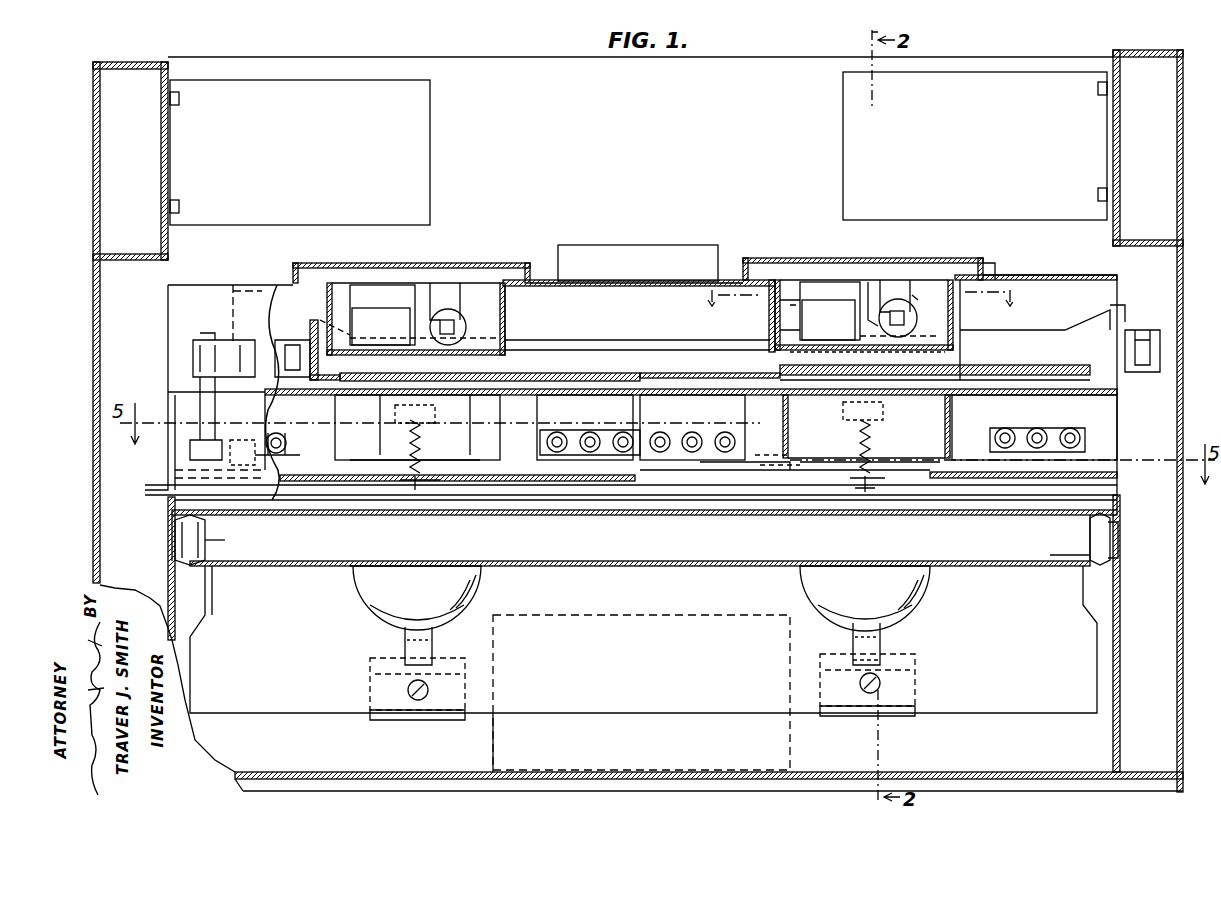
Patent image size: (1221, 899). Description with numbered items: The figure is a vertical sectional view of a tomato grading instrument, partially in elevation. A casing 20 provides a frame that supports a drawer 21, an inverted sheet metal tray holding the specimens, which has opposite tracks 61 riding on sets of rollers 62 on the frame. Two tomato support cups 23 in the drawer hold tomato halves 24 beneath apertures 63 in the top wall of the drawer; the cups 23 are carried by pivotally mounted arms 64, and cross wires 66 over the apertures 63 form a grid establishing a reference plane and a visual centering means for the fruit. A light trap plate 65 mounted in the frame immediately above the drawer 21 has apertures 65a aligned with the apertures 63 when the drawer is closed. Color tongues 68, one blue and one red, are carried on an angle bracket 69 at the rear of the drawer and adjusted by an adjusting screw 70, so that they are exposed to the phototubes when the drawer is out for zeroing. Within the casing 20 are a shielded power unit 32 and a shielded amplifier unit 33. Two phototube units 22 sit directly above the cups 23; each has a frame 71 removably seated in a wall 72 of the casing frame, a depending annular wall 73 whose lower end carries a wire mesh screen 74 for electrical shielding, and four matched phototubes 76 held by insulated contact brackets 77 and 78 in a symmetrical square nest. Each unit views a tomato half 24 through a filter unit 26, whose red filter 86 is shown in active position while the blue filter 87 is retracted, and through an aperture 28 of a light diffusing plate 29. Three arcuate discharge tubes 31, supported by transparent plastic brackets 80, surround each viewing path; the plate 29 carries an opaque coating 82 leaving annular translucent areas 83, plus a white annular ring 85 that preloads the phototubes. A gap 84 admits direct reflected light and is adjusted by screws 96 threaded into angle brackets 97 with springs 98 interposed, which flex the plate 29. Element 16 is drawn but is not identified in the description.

The pin 16 is at (925, 301).
The casing 20 is at (1183, 262).
The drawer 21 is at (1095, 645).
The phototube unit 22 is at (464, 262).
The tomato support cup 23 is at (378, 618).
The tomato half 24 is at (478, 586).
The filter unit 26 is at (1000, 358).
The aperture 28 is at (800, 462).
The light diffusing plate 29 is at (758, 486).
The light source tube 31 is at (285, 435).
The power unit 32 is at (430, 176).
The amplifier unit 33 is at (843, 163).
The track 61 is at (212, 532).
The roller 62 is at (1112, 530).
The aperture 63 is at (598, 512).
The pivotally mounted arm 64 is at (882, 646).
The light trap plate 65 is at (700, 497).
The aperture 65a is at (548, 486).
The cross wire 66 is at (445, 566).
The color tongue 68 is at (845, 660).
The angle bracket 69 is at (918, 678).
The adjusting screw 70 is at (860, 683).
The frame 71 is at (985, 265).
The wall 72 is at (1050, 275).
The annular wall 73 is at (775, 316).
The wire mesh screen 74 is at (800, 347).
The phototube 76 is at (832, 312).
The insulated contact bracket 77 is at (915, 300).
The insulated contact bracket 78 is at (875, 288).
The bracket 80 is at (665, 393).
The opaque coating 82 is at (578, 445).
The translucent area 83 is at (1065, 541).
The gap 84 is at (312, 485).
The white annular ring 85 is at (490, 465).
The red filter 86 is at (835, 378).
The blue filter 87 is at (1060, 367).
The screw 96 is at (420, 482).
The angle bracket 97 is at (662, 410).
The spring 98 is at (880, 445).